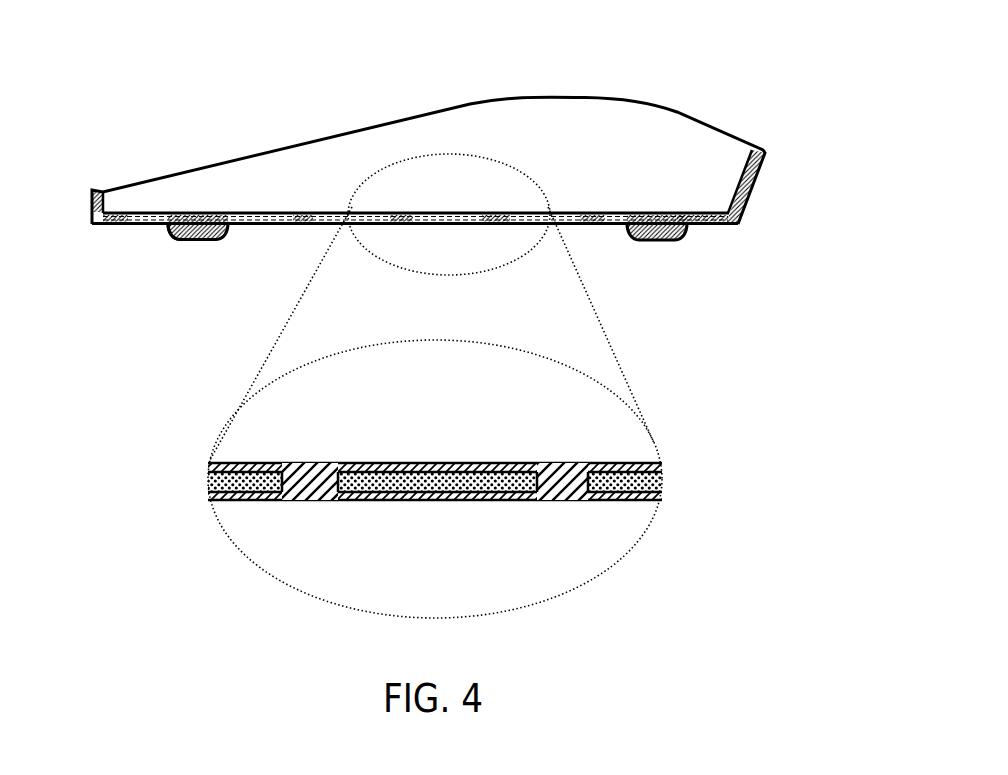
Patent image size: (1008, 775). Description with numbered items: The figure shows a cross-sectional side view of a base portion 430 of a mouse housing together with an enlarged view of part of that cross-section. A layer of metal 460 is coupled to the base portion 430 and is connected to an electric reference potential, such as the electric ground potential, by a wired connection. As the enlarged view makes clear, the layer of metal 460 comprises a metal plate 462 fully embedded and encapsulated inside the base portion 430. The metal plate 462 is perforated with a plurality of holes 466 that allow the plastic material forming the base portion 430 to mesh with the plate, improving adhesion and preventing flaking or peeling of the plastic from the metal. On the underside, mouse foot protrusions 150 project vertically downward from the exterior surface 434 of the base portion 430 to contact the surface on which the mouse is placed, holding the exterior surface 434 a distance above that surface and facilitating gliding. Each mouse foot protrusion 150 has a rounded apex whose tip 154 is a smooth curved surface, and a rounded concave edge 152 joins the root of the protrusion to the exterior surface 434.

The base portion 430 is at (718, 103).
The layer of metal 460 is at (105, 224).
The metal plate 462 is at (445, 213).
The holes 466 is at (307, 480).
The mouse foot protrusions 150 is at (195, 243).
The rounded concave edge 152 is at (173, 228).
The tip 154 is at (187, 243).
The exterior surface 434 is at (252, 225).